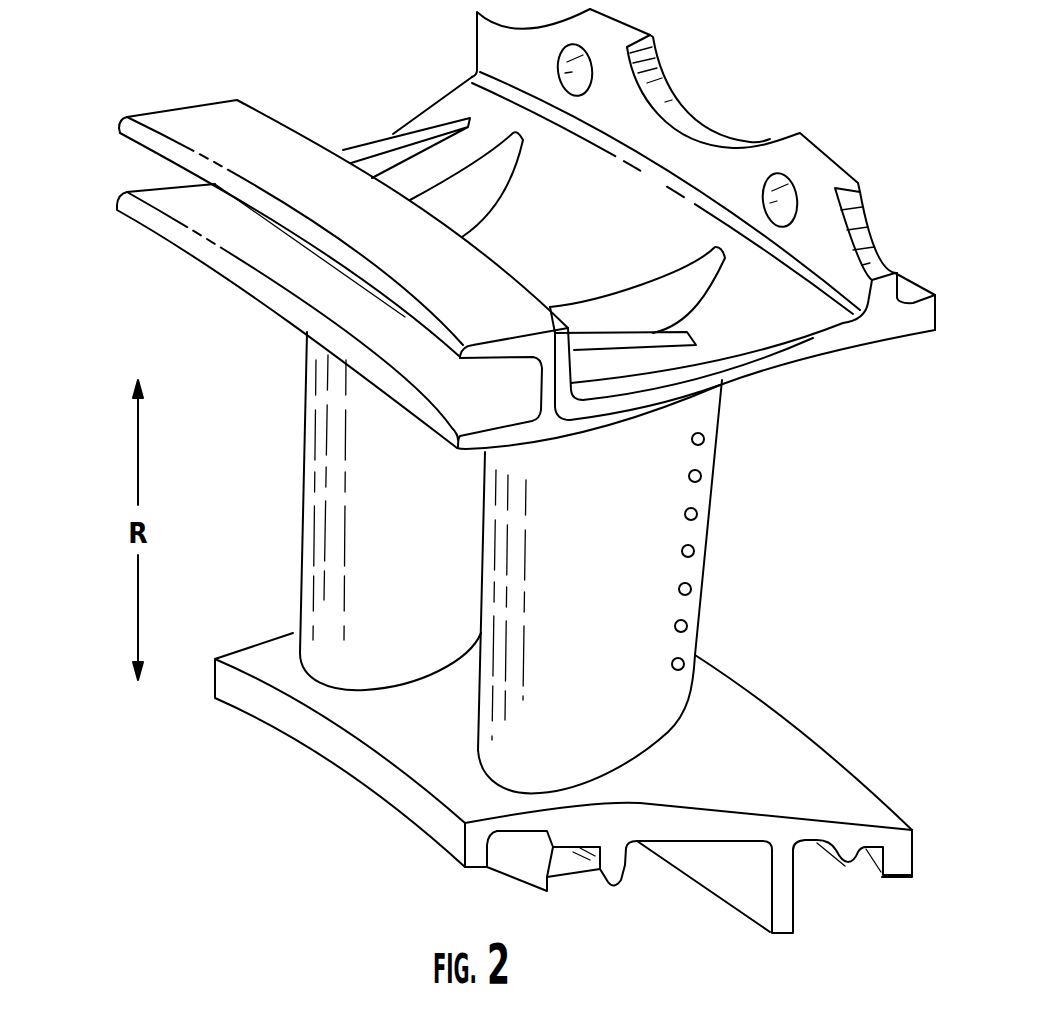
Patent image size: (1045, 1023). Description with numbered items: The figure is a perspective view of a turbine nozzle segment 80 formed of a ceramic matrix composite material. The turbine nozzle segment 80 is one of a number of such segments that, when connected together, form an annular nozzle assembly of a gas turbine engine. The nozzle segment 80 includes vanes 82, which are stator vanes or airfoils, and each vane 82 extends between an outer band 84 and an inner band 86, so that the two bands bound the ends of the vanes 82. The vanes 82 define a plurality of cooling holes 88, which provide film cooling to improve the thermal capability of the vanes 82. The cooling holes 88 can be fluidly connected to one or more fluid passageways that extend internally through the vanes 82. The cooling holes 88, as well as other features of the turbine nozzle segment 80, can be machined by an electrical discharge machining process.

The turbine nozzle segment 80 is at (92, 152).
The vanes 82 is at (497, 663).
The outer band 84 is at (866, 340).
The inner band 86 is at (823, 785).
The cooling holes 88 is at (710, 586).